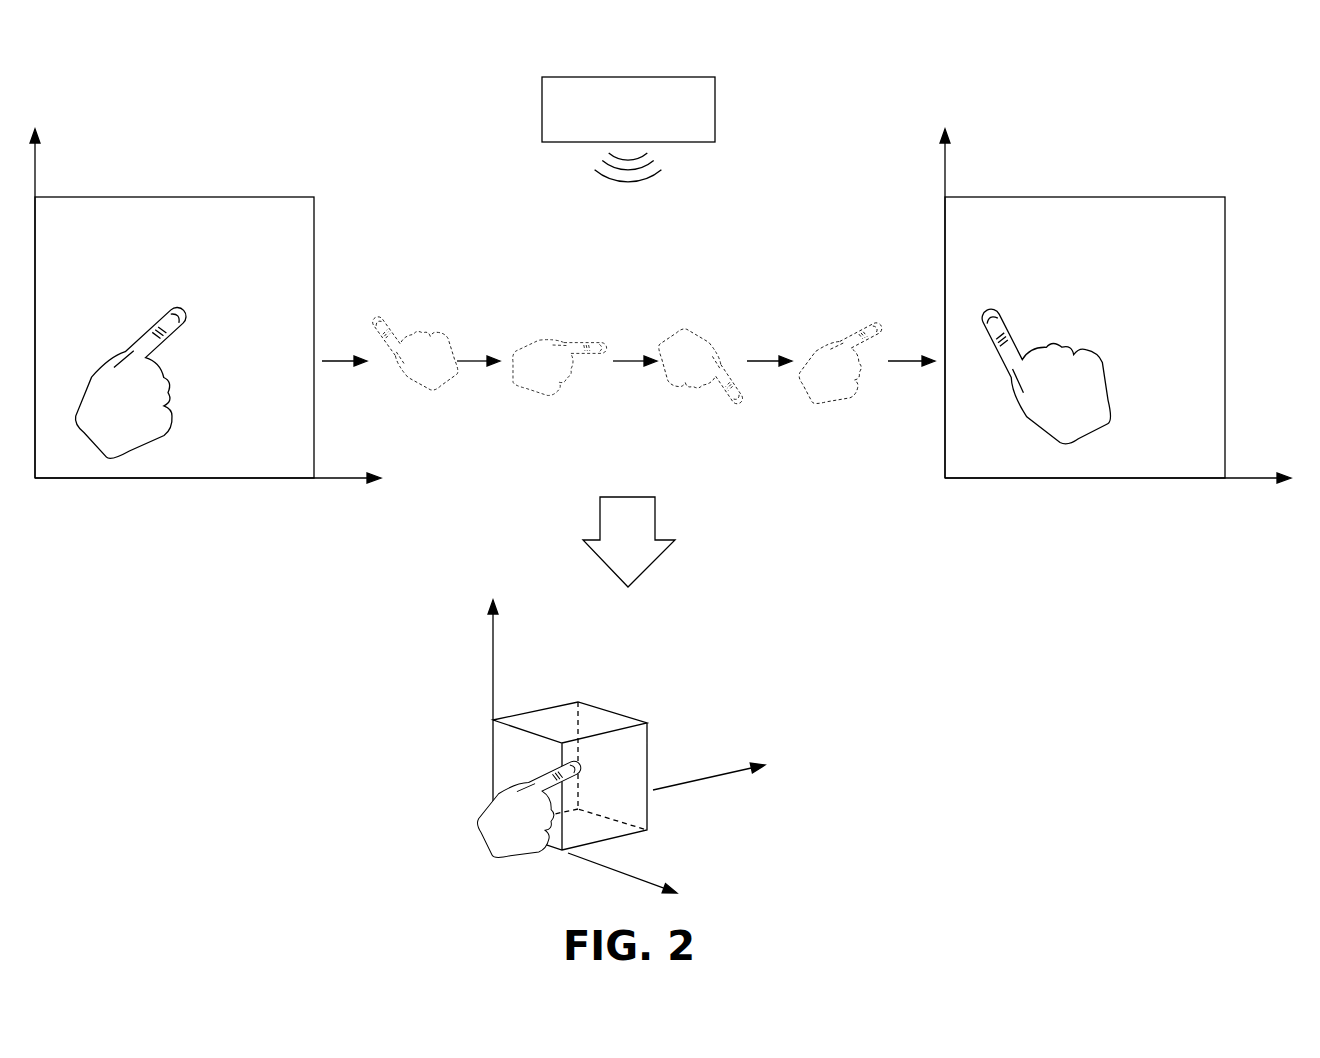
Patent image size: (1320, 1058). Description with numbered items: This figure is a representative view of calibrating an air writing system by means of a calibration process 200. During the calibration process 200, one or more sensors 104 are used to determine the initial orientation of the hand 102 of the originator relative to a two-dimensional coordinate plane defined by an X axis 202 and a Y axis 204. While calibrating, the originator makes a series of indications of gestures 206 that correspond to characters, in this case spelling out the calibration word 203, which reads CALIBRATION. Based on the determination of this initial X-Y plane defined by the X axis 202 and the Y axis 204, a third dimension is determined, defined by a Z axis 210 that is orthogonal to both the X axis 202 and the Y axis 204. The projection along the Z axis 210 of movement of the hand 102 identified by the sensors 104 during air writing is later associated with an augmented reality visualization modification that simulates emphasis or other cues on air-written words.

The hand 102 is at (138, 421).
The sensors 104 is at (715, 110).
The calibration process 200 is at (257, 116).
The X axis 202 is at (35, 171).
The calibration text 203 is at (447, 201).
The Y axis 204 is at (344, 482).
The gestures 206 is at (716, 440).
The Z axis 210 is at (713, 772).